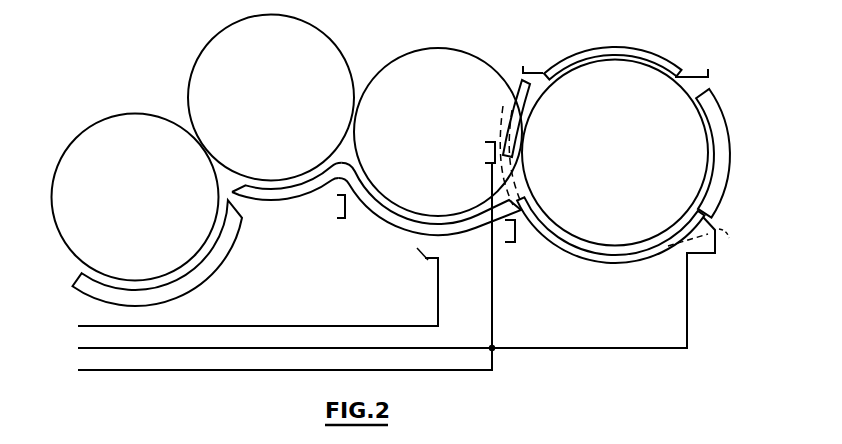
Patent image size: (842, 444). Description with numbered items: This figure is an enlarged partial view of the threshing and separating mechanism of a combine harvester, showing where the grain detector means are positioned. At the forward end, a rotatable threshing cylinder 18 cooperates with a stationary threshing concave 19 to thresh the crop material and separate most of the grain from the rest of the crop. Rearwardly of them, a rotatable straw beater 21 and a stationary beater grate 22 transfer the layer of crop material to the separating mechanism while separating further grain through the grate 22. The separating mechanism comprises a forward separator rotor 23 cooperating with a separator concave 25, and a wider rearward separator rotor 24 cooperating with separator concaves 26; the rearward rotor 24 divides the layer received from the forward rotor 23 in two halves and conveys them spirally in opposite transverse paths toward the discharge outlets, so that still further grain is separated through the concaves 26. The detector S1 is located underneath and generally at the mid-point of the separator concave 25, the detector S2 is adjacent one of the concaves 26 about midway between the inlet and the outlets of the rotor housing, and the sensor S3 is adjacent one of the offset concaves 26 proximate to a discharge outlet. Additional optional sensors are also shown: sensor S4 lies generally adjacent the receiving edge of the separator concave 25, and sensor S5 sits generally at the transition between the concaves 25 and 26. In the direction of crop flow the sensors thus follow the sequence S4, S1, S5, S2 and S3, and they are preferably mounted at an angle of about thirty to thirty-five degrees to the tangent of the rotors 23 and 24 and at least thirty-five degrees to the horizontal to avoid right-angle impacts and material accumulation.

The threshing cylinder 18 is at (69, 153).
The straw beater 21 is at (200, 62).
The forward separator rotor 23 is at (500, 74).
The rearward separator rotor 24 is at (675, 73).
The threshing concave 19 is at (215, 275).
The beater grate 22 is at (283, 206).
The separator concave 25 is at (383, 219).
The separator concaves 26 is at (530, 104).
The detector S1 is at (418, 252).
The detector S2 is at (721, 243).
The sensor S3 is at (485, 150).
The sensor S4 is at (345, 211).
The sensor S5 is at (515, 236).